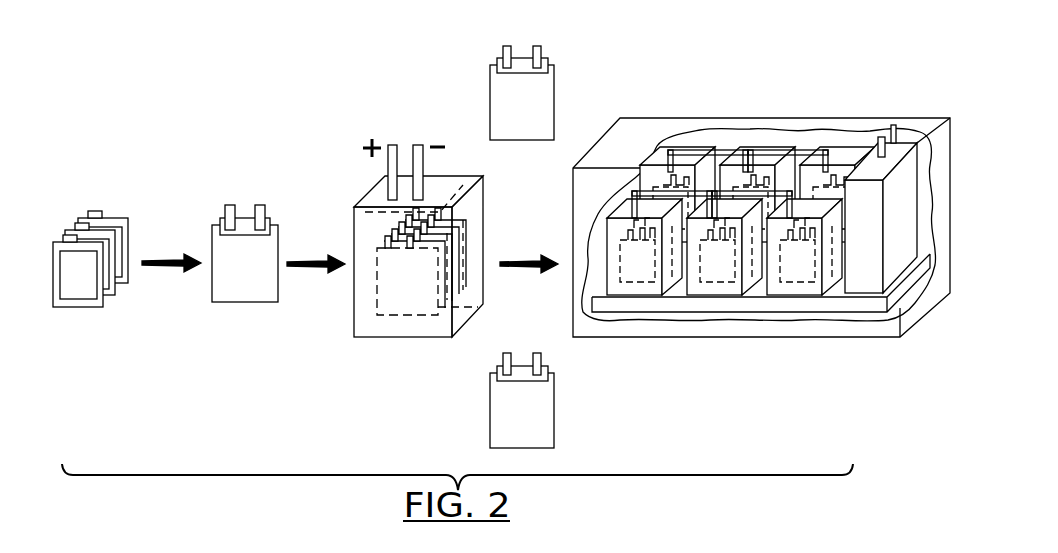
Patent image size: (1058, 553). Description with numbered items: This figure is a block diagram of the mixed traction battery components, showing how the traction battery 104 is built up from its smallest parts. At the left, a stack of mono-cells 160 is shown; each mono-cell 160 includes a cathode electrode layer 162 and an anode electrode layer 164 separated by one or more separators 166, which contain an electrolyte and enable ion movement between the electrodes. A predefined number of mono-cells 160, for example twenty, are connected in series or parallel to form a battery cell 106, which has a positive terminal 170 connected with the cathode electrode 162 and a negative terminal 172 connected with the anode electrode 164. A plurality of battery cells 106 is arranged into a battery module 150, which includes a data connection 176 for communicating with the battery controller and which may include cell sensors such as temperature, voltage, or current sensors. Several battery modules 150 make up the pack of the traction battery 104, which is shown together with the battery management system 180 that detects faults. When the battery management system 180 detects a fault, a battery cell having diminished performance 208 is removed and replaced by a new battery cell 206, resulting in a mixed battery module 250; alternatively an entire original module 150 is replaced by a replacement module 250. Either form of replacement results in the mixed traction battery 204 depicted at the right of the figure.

The traction battery 104 is at (761, 170).
The mixed traction battery 204 is at (761, 170).
The battery cell 106 is at (316, 274).
The battery module 150 is at (576, 269).
The replacement battery module 250 is at (720, 302).
The mono-cell 160 is at (111, 257).
The cathode electrode layer 162 is at (86, 307).
The anode electrode layer 164 is at (110, 218).
The separator 166 is at (117, 250).
The positive terminal 170 is at (227, 205).
The negative terminal 172 is at (258, 205).
The data connection 176 is at (372, 198).
The battery management system 180 is at (899, 150).
The new battery cell 206 is at (474, 226).
The battery cell having diminished performance 208 is at (467, 278).